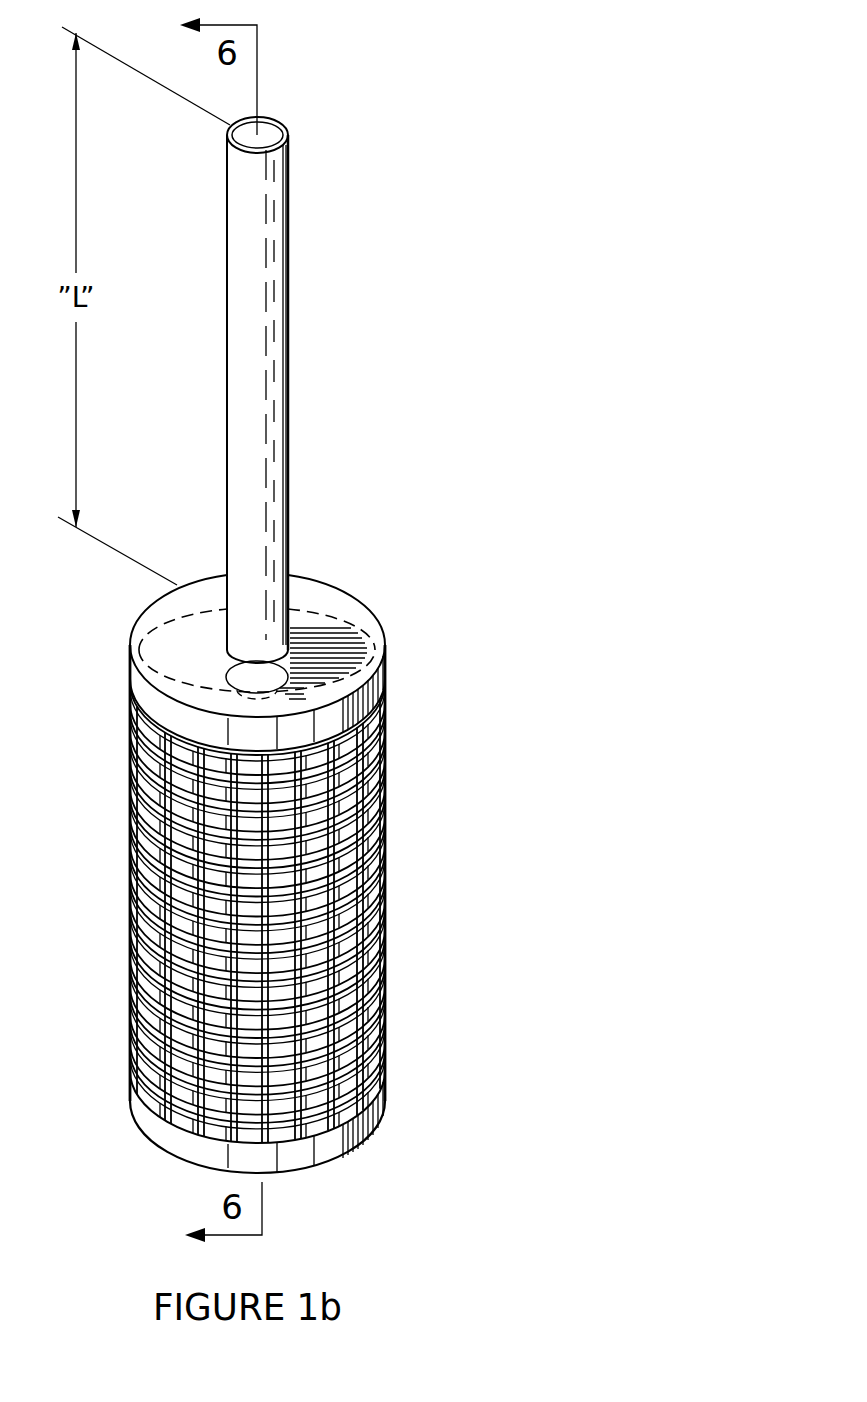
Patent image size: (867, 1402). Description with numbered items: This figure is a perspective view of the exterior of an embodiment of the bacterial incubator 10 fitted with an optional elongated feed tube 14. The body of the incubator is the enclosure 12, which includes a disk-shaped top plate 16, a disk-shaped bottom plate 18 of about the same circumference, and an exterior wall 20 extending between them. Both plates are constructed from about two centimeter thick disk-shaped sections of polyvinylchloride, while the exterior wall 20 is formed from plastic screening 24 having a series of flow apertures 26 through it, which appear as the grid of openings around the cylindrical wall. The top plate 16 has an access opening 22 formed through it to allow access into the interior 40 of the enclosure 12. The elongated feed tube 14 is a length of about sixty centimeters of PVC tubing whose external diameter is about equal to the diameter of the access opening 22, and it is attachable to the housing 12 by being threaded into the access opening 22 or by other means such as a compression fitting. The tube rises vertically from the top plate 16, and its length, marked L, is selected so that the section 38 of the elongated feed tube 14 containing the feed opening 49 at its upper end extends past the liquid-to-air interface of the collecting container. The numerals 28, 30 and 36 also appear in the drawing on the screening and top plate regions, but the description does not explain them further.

The bacterial incubator 10 is at (445, 630).
The enclosure 12 is at (542, 830).
The elongated feed tube 14 is at (388, 345).
The top plate 16 is at (347, 677).
The bottom plate 18 is at (360, 1125).
The exterior wall 20 is at (385, 995).
The access opening 22 is at (130, 637).
The plastic screening 24 is at (135, 740).
The flow apertures 26 is at (345, 805).
The ribs between apertures 28 is at (328, 738).
The lower edge of side wall 30 is at (178, 1120).
The bore in top cap 36 is at (243, 695).
The section of elongated feed tube 38 is at (288, 228).
The interior 40 is at (277, 880).
The feed opening 49 is at (273, 123).